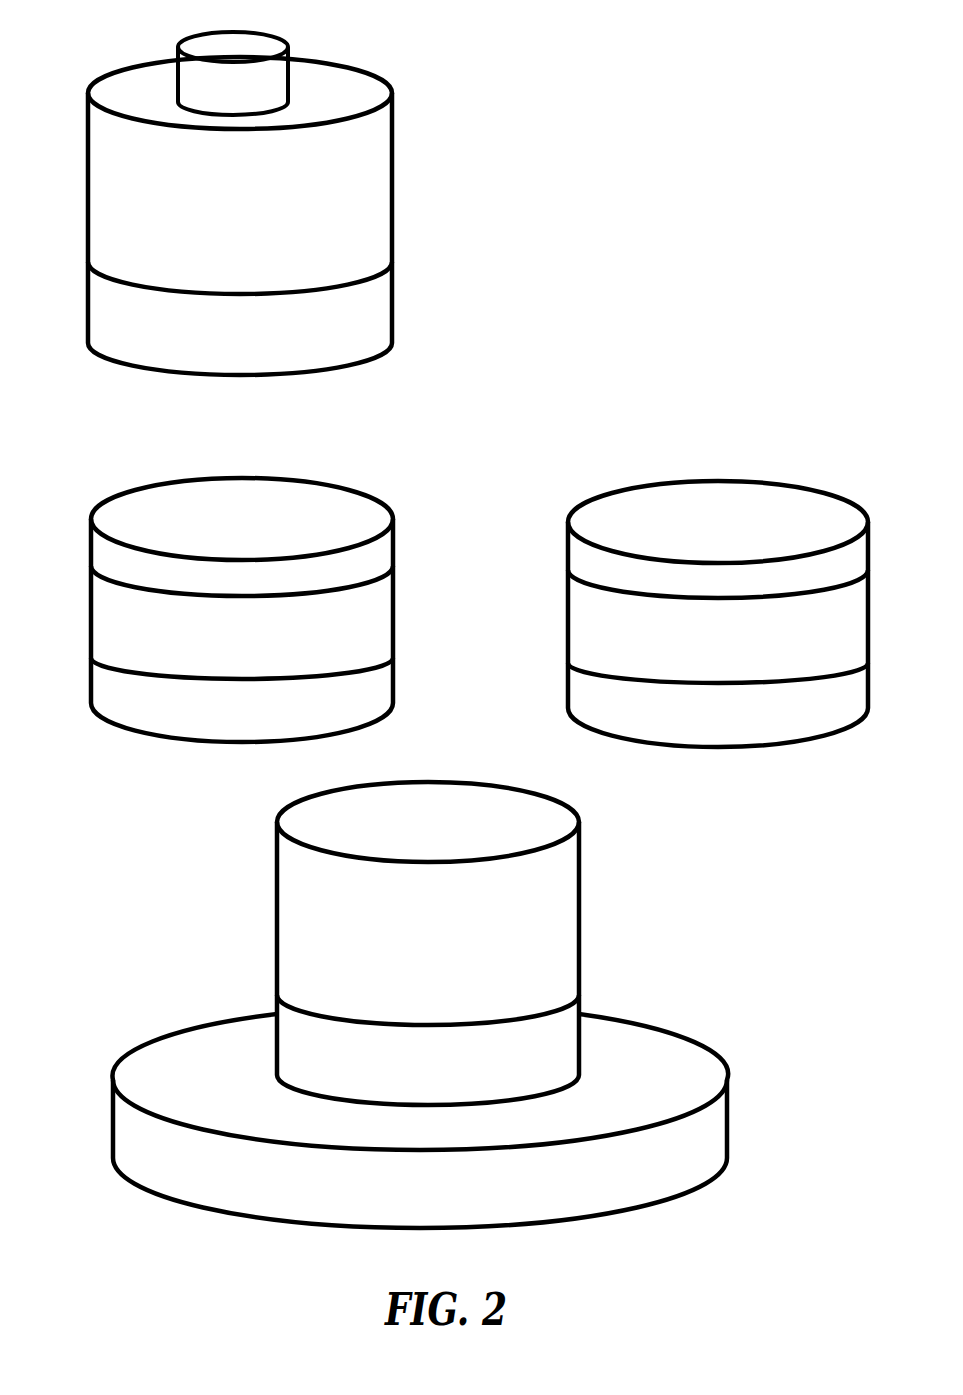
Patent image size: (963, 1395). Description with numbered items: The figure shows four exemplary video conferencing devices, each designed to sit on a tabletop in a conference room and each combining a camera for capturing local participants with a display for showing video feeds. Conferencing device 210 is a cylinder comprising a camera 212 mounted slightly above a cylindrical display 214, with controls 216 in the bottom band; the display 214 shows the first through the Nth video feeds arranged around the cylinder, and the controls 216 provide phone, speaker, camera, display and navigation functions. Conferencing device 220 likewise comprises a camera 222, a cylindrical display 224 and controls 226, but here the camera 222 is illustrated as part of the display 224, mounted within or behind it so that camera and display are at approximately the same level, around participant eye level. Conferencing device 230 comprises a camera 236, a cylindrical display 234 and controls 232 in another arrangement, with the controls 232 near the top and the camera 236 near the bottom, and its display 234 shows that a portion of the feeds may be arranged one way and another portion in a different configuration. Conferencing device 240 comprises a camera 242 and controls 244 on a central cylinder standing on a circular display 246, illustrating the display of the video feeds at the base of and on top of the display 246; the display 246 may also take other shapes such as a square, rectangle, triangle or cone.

The conferencing device 210 is at (279, 194).
The camera 212 is at (416, 73).
The cylindrical display 214 is at (417, 192).
The controls 216 is at (422, 313).
The conferencing device 220 is at (277, 574).
The camera 222 is at (409, 535).
The cylindrical display 224 is at (410, 607).
The controls 226 is at (406, 672).
The conferencing device 230 is at (666, 588).
The controls 232 is at (552, 560).
The cylindrical display 234 is at (547, 632).
The camera 236 is at (547, 697).
The conferencing device 240 is at (474, 994).
The camera 242 is at (616, 893).
The controls 244 is at (598, 1005).
The circular display 246 is at (740, 1117).